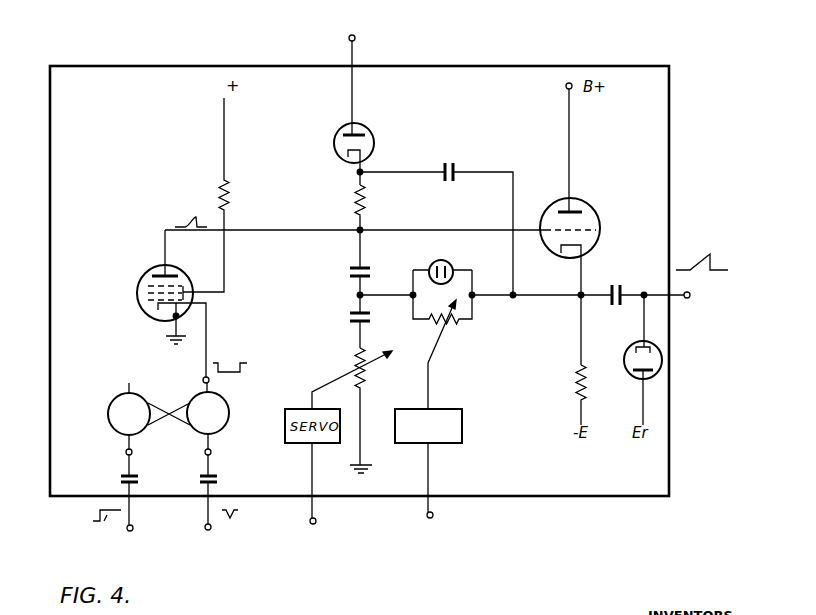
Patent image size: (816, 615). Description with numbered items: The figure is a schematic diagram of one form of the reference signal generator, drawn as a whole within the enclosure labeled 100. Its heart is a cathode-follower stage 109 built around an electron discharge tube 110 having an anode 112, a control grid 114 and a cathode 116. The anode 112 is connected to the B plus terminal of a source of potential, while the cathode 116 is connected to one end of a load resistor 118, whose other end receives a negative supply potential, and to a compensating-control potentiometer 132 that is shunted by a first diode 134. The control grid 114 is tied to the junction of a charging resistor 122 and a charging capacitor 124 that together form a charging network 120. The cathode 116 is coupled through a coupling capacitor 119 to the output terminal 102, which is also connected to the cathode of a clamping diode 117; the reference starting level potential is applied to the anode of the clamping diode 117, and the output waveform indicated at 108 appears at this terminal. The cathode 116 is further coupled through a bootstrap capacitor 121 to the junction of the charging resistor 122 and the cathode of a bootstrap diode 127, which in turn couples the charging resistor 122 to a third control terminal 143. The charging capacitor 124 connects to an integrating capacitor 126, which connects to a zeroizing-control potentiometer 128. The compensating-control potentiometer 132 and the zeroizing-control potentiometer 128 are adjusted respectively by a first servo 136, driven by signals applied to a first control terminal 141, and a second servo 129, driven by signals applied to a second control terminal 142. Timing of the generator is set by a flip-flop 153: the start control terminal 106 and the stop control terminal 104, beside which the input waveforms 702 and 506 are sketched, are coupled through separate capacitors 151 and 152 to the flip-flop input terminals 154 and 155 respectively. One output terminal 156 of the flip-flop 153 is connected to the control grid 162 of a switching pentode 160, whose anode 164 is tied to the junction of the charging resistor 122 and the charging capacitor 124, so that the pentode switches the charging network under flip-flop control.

The circuit enclosure 100 is at (670, 141).
The output terminal 102 is at (688, 298).
The stop control terminal 104 is at (208, 530).
The start control terminal 106 is at (133, 527).
The output waveform 108 is at (711, 253).
The cathode-follower stage 109 is at (553, 289).
The electron discharge tube 110 is at (600, 221).
The anode 112 is at (573, 210).
The control grid 114 is at (596, 231).
The cathode 116 is at (578, 253).
The clamping diode 117 is at (662, 356).
The load resistor 118 is at (577, 386).
The coupling capacitor 119 is at (618, 285).
The charging network 120 is at (352, 225).
The bootstrap capacitor 121 is at (452, 163).
The charging resistor 122 is at (364, 197).
The charging capacitor 124 is at (372, 268).
The integrating capacitor 126 is at (372, 316).
The bootstrap diode 127 is at (375, 140).
The zeroizing-control potentiometer 128 is at (360, 356).
The second servo 129 is at (303, 398).
The compensating-control potentiometer 132 is at (452, 322).
The first diode 134 is at (451, 264).
The first servo 136 is at (462, 416).
The first control terminal 141 is at (433, 515).
The second control terminal 142 is at (316, 521).
The third control terminal 143 is at (355, 37).
The capacitor 151 is at (121, 478).
The capacitor 152 is at (211, 477).
The flip-flop 153 is at (173, 389).
The input terminal 154 is at (126, 452).
The input terminal 155 is at (205, 453).
The output terminal 156 is at (209, 381).
The switching pentode 160 is at (179, 316).
The control grid 162 is at (137, 295).
The anode 164 is at (168, 266).
The input waveform 702 is at (93, 521).
The input waveform 506 is at (238, 514).